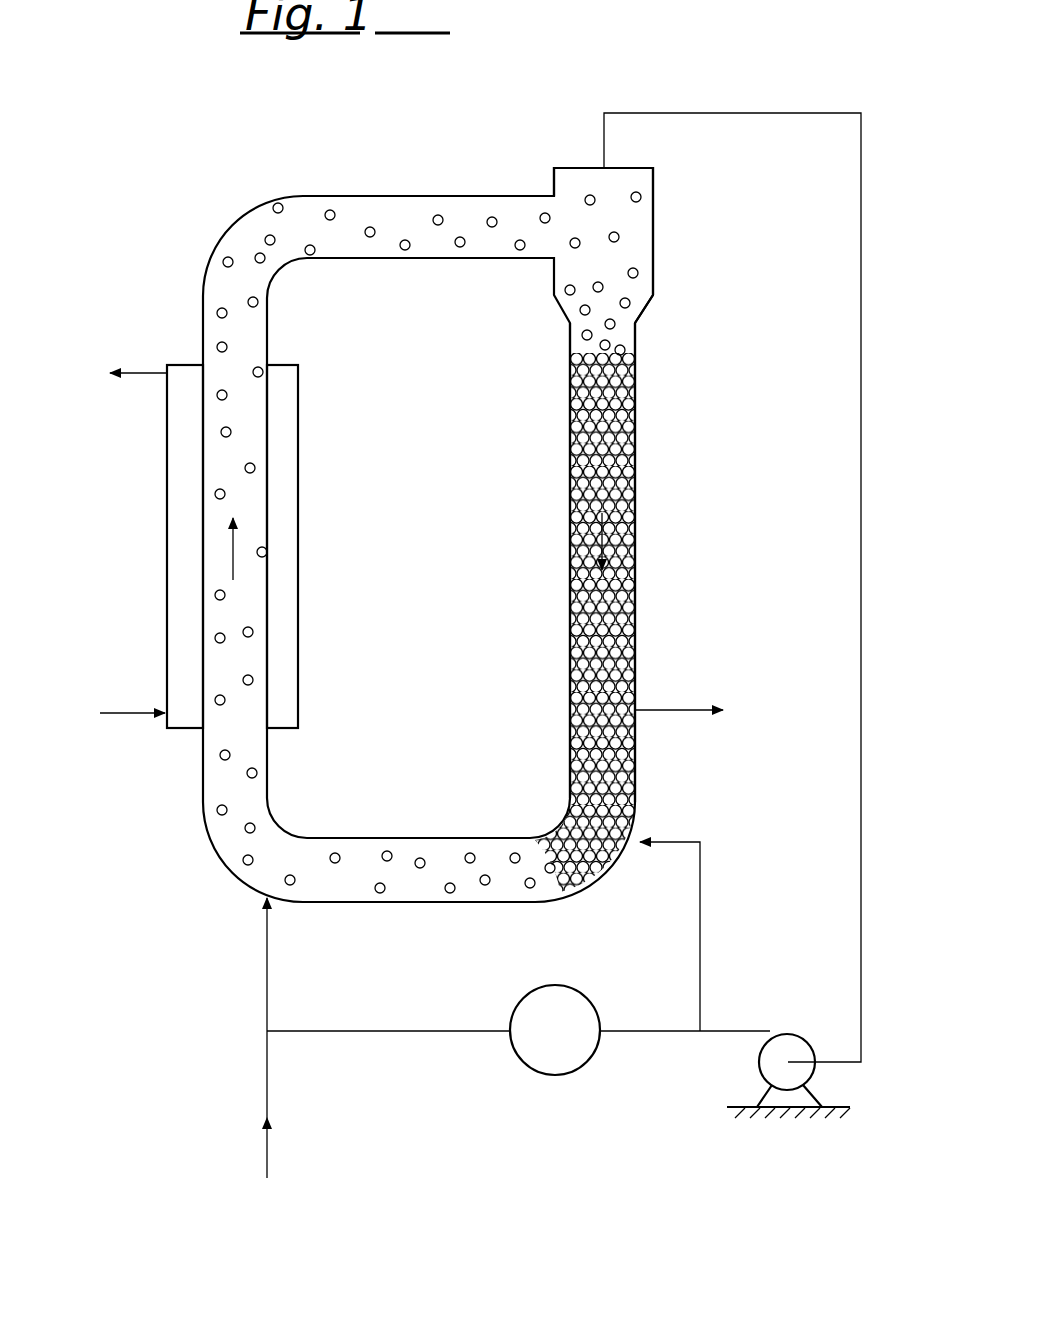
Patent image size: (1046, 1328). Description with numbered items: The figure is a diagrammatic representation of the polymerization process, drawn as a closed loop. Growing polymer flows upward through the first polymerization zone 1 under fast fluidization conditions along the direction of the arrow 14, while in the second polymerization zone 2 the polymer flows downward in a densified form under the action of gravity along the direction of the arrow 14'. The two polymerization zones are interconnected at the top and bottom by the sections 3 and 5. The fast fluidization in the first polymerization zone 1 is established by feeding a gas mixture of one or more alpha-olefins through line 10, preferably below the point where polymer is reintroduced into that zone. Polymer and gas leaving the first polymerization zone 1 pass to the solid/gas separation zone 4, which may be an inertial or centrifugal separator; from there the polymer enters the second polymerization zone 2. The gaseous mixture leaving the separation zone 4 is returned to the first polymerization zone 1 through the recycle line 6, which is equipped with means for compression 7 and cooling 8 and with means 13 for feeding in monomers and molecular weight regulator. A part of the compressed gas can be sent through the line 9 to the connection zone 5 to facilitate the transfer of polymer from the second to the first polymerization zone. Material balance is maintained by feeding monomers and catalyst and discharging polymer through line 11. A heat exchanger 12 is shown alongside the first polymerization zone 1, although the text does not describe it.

The first polymerization zone 1 is at (203, 760).
The second polymerization zone 2 is at (635, 455).
The section 3 is at (400, 196).
The solid/gas separation zone 4 is at (653, 230).
The section 5 is at (400, 902).
The recycle line 6 is at (861, 505).
The means for compression 7 is at (760, 1072).
The means for cooling 8 is at (550, 1075).
The line 9 is at (700, 935).
The line 10 is at (267, 955).
The line 11 is at (680, 710).
The heat exchanger 12 is at (167, 485).
The means for feeding in the monomers and the molecular weight regulator 13 is at (267, 1165).
The arrow 14 is at (186, 479).
The arrow 14' is at (666, 541).